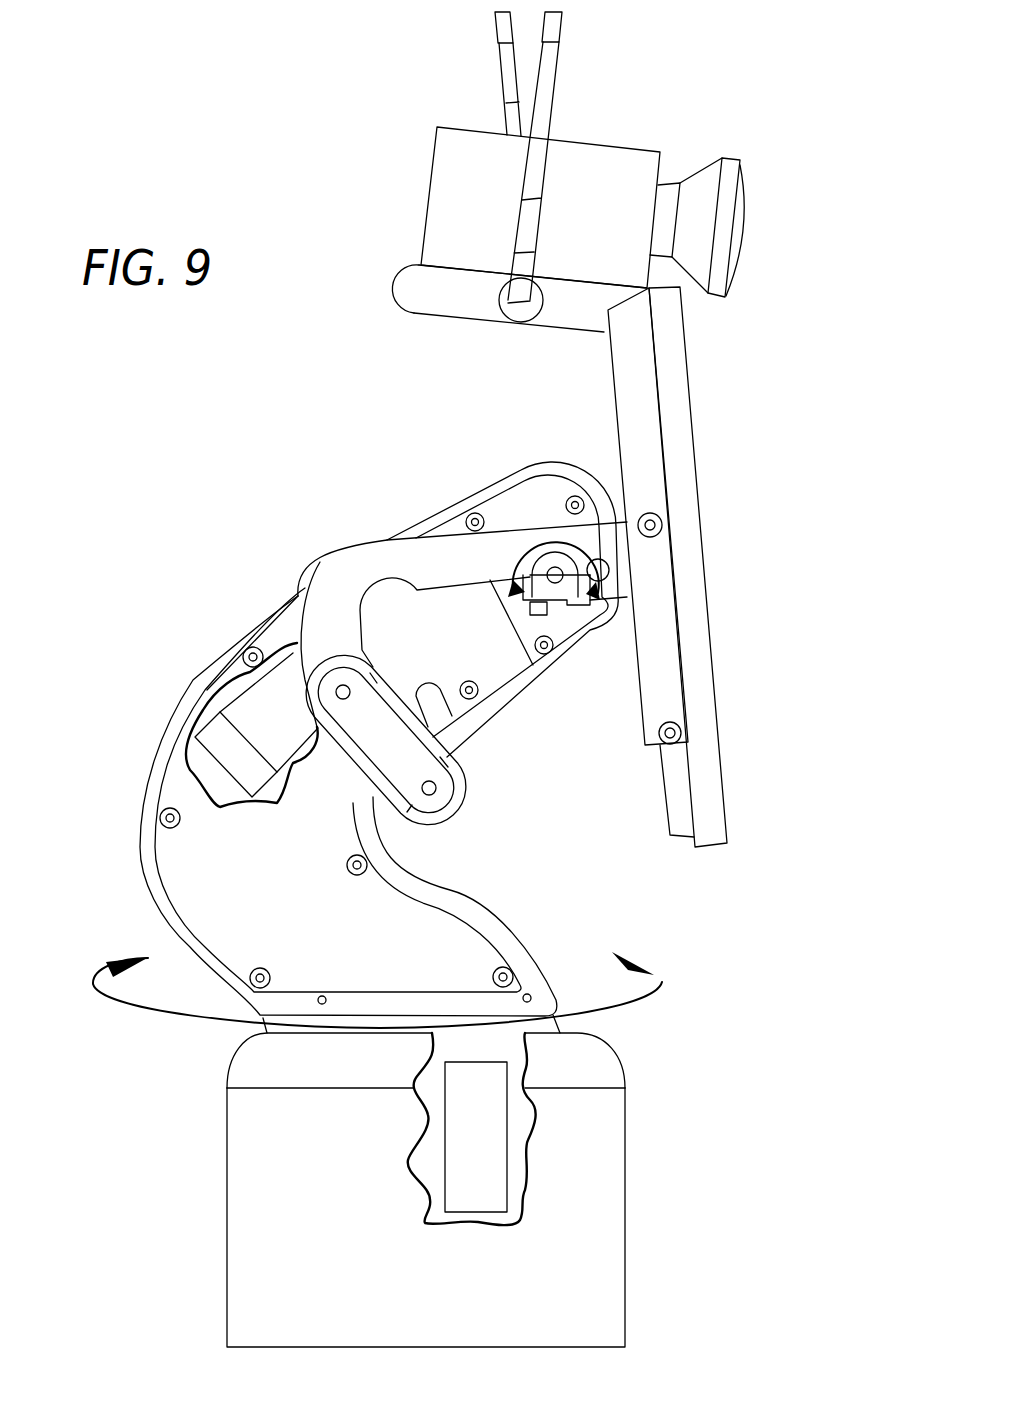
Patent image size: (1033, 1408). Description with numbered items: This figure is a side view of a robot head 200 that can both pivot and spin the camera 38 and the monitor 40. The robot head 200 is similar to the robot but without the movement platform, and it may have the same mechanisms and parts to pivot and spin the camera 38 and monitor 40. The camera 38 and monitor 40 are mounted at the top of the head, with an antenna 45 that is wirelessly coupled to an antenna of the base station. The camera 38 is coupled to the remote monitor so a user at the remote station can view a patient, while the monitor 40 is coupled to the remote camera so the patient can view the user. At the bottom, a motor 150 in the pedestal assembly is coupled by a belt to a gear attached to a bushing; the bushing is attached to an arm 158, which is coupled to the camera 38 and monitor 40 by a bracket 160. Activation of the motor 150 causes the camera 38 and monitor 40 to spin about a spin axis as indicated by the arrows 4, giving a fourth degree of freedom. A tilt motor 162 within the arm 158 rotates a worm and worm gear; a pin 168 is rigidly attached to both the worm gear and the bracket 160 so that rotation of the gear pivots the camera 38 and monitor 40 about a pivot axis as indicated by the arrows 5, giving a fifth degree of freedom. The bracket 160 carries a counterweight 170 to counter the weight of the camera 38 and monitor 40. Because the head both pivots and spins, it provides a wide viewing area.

The robot head 200 is at (170, 526).
The motor 150 is at (492, 1132).
The arrows 4 is at (383, 990).
The arrows 5 is at (543, 571).
The arm 158 is at (217, 893).
The tilt motor 162 is at (263, 702).
The bracket 160 is at (390, 553).
The pin 168 is at (555, 575).
The counterweight 170 is at (440, 798).
The monitor 40 is at (713, 675).
The camera 38 is at (620, 173).
The antenna 45 is at (547, 88).